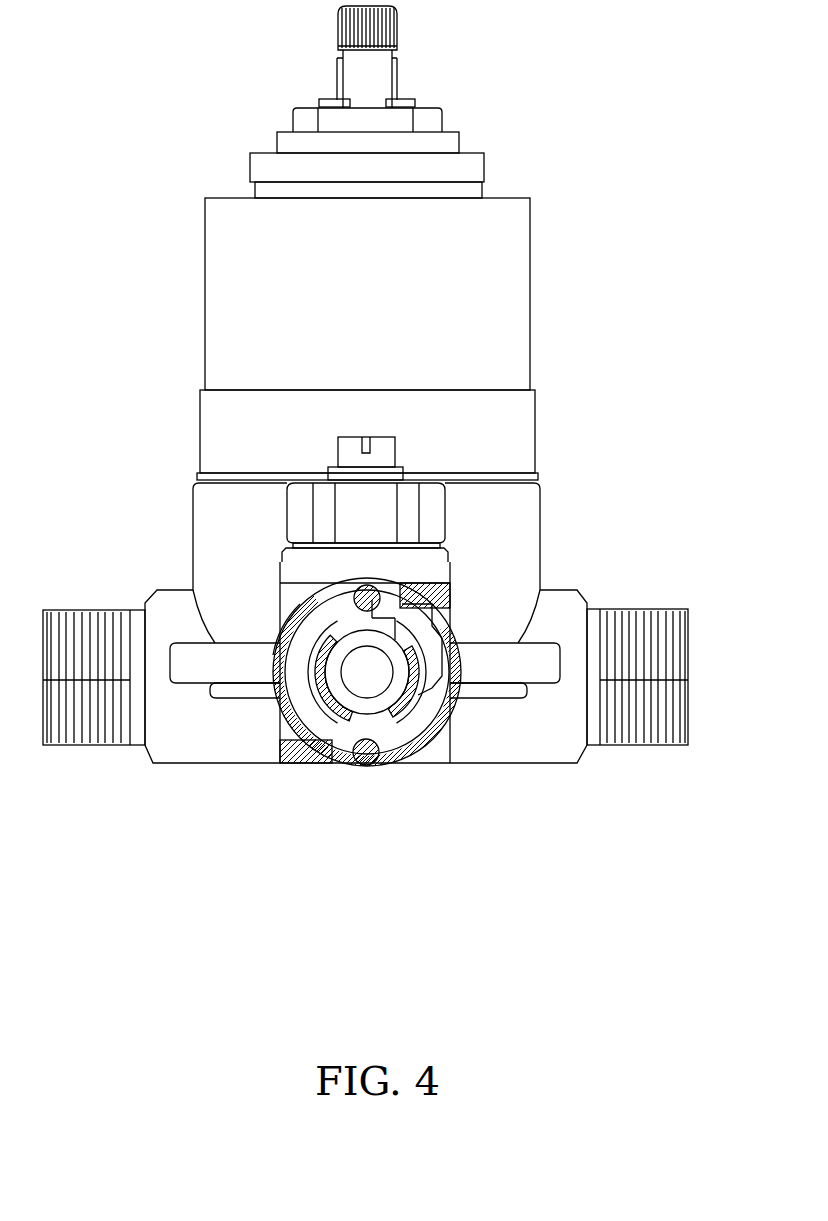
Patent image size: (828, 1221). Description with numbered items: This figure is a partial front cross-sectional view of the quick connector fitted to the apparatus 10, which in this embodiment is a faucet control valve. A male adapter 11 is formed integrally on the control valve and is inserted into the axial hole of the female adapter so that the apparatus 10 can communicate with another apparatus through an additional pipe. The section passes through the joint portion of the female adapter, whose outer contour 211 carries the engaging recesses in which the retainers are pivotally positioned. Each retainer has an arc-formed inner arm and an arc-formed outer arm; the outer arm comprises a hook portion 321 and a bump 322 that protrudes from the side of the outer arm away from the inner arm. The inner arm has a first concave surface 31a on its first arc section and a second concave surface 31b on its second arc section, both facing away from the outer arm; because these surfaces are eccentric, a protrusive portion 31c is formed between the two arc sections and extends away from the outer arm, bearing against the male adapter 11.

The apparatus 10 is at (558, 173).
The male adapter 11 is at (382, 703).
The outer contour 211 is at (272, 660).
The first concave surface 31a is at (345, 668).
The second concave surface 31b is at (353, 593).
The protrusive portion 31c is at (342, 653).
The hook portion 321 is at (320, 745).
The bump 322 is at (292, 713).